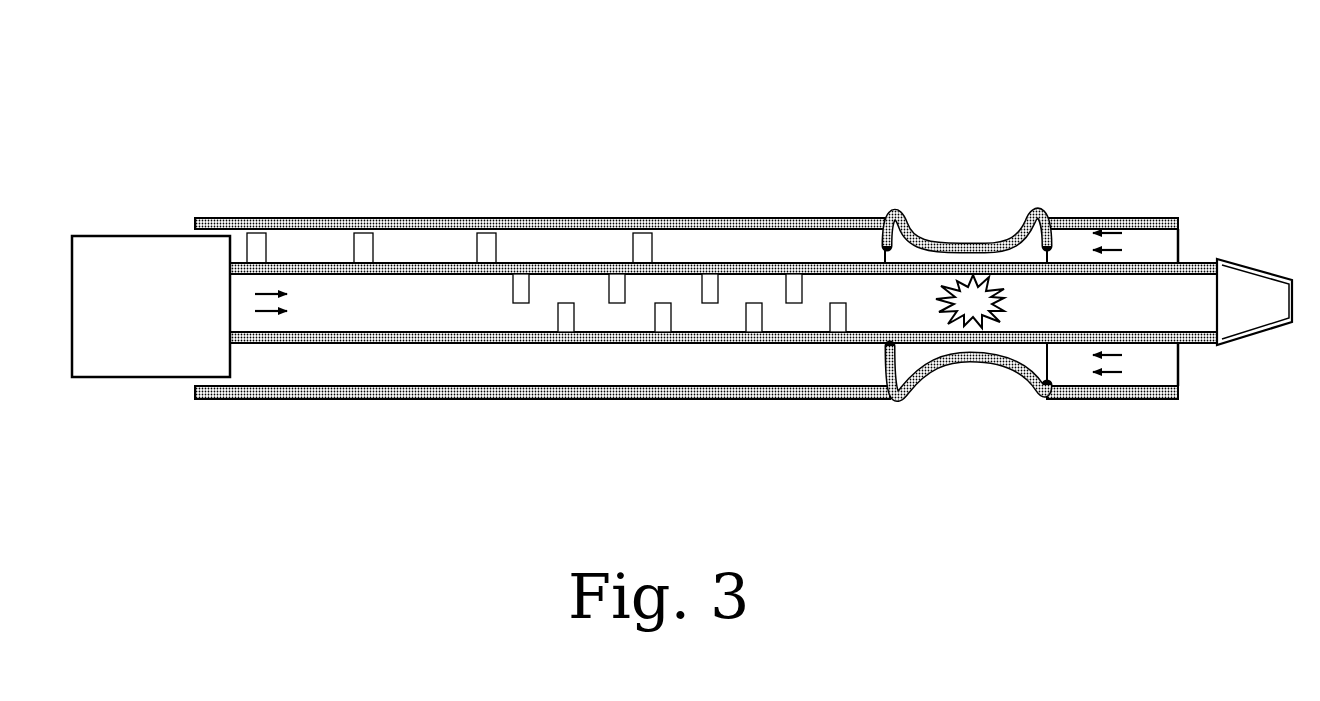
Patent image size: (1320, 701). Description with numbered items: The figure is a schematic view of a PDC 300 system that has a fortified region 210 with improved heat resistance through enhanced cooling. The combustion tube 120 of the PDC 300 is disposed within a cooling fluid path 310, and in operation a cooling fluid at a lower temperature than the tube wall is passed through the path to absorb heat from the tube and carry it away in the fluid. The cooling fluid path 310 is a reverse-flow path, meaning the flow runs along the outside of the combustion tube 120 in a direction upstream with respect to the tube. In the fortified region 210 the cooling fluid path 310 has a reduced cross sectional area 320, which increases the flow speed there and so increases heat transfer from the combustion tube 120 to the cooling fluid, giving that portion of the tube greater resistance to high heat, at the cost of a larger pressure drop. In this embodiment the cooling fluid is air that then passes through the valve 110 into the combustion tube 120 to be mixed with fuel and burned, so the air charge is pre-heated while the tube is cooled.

The PDC 300 is at (412, 122).
The valve 110 is at (151, 378).
The combustion tube 120 is at (413, 343).
The cooling fluid path 310 is at (795, 248).
The reduced cross sectional area 320 is at (968, 258).
The fortified region 210 is at (1060, 432).